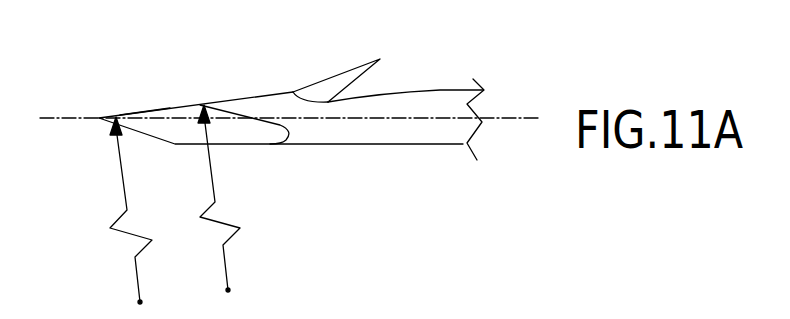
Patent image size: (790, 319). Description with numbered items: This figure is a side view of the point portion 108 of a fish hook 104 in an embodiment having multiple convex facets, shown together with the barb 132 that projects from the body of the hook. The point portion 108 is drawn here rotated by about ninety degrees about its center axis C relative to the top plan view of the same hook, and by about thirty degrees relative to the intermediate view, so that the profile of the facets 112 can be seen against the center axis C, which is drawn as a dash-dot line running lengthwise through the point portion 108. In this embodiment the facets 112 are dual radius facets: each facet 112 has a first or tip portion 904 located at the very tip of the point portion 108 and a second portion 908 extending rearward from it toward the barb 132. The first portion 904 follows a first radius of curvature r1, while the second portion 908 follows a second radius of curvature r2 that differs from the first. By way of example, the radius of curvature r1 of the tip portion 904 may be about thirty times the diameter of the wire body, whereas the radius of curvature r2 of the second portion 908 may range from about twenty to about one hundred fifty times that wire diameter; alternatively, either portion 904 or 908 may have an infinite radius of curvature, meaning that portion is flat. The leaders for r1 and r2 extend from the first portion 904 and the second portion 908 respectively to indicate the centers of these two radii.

The fish hook 104 is at (442, 103).
The point portion 108 is at (187, 105).
The facet 112 is at (230, 100).
The barb 132 is at (338, 75).
The first or tip portion 904 is at (99, 117).
The second portion 908 is at (141, 108).
The center axis C is at (512, 118).
The radius of curvature of the first portion r1 is at (140, 219).
The radius of curvature of the second portion r2 is at (228, 207).